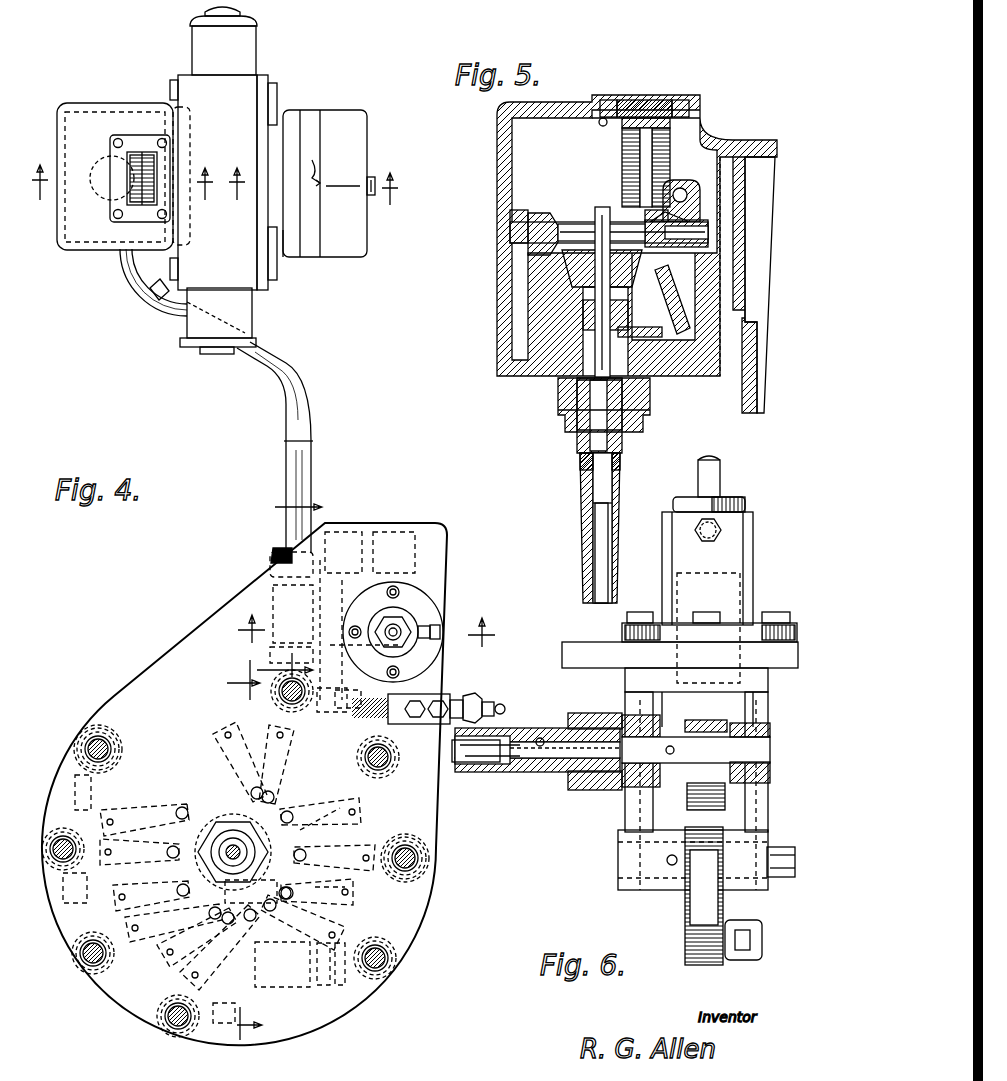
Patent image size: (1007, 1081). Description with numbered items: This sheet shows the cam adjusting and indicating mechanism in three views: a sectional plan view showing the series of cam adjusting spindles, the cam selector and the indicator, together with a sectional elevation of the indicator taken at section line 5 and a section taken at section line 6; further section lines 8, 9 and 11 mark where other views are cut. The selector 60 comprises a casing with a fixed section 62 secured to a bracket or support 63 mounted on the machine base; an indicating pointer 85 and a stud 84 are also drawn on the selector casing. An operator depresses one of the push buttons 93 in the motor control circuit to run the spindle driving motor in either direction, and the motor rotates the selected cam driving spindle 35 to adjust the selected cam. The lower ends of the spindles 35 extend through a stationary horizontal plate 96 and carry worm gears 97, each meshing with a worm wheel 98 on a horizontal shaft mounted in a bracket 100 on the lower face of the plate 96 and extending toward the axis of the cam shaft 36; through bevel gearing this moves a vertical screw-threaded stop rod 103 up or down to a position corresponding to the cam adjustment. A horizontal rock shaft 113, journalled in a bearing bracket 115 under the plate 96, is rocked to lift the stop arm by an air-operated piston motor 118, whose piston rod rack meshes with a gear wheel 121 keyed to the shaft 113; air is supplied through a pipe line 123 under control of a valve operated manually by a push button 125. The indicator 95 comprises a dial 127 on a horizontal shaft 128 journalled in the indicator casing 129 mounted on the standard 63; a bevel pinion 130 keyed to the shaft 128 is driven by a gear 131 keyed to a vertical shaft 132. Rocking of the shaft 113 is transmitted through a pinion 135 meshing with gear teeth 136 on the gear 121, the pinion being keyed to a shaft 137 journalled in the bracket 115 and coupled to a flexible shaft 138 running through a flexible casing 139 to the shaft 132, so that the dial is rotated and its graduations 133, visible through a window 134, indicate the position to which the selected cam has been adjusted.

In FIG. 4, the push button 93 is at (205, 8).
In FIG. 4, the bracket or support 63 is at (245, 86).
In FIG. 5, the bracket or support 63 is at (742, 398).
In FIG. 4, the indicator 95 is at (108, 104).
In FIG. 5, the indicator 95 is at (520, 185).
In FIG. 4, the graduations or scale markings 133 is at (112, 165).
In FIG. 4, the window 134 is at (145, 175).
In FIG. 5, the window 134 is at (660, 98).
In FIG. 4, the selector 60 is at (352, 163).
In FIG. 4, the pointer 85 is at (310, 161).
In FIG. 4, the stud 84 is at (372, 180).
In FIG. 4, the fixed section 62 is at (295, 252).
In FIG. 4, the flexible shaft 138 is at (150, 298).
In FIG. 5, the flexible shaft 138 is at (595, 542).
In FIG. 6, the flexible shaft 138 is at (505, 772).
In FIG. 4, the flexible casing 139 is at (172, 314).
In FIG. 4, the push button 125 is at (222, 354).
In FIG. 4, the section line 6— 6 is at (279, 509).
In FIG. 4, the section line 5— 5 is at (121, 189).
In FIG. 4, the section line 11- 11 is at (321, 190).
In FIG. 4, the section line 8- 8 is at (237, 854).
In FIG. 4, the section line 9- 9 is at (364, 636).
In FIG. 4, the stationary horizontal plate 96 is at (436, 828).
In FIG. 6, the stationary horizontal plate 96 is at (608, 660).
In FIG. 4, the worm wheel 98 is at (412, 795).
In FIG. 4, the cam driving spindle 35 is at (90, 750).
In FIG. 4, the worm gear 97 is at (120, 750).
In FIG. 4, the cam shaft 36 is at (228, 842).
In FIG. 4, the stop rod 103 is at (280, 897).
In FIG. 4, the bracket 100 is at (348, 886).
In FIG. 4, the rock shaft 113 is at (345, 803).
In FIG. 6, the rock shaft 113 is at (780, 878).
In FIG. 4, the air-operated piston motor 118 is at (415, 615).
In FIG. 6, the air-operated piston motor 118 is at (672, 555).
In FIG. 5, the indicator casing 129 is at (512, 172).
In FIG. 5, the dial 127 is at (625, 152).
In FIG. 5, the bevel pinion 130 is at (640, 210).
In FIG. 5, the horizontal shaft 128 is at (655, 222).
In FIG. 5, the gear 131 is at (612, 222).
In FIG. 5, the vertical shaft 132 is at (590, 372).
In FIG. 6, the pipe line 123 is at (715, 470).
In FIG. 6, the shaft 137 is at (615, 785).
In FIG. 6, the pinion 135 is at (685, 782).
In FIG. 6, the gear teeth 136 is at (700, 822).
In FIG. 6, the bearing bracket 115 is at (625, 822).
In FIG. 6, the gear wheel 121 is at (700, 910).